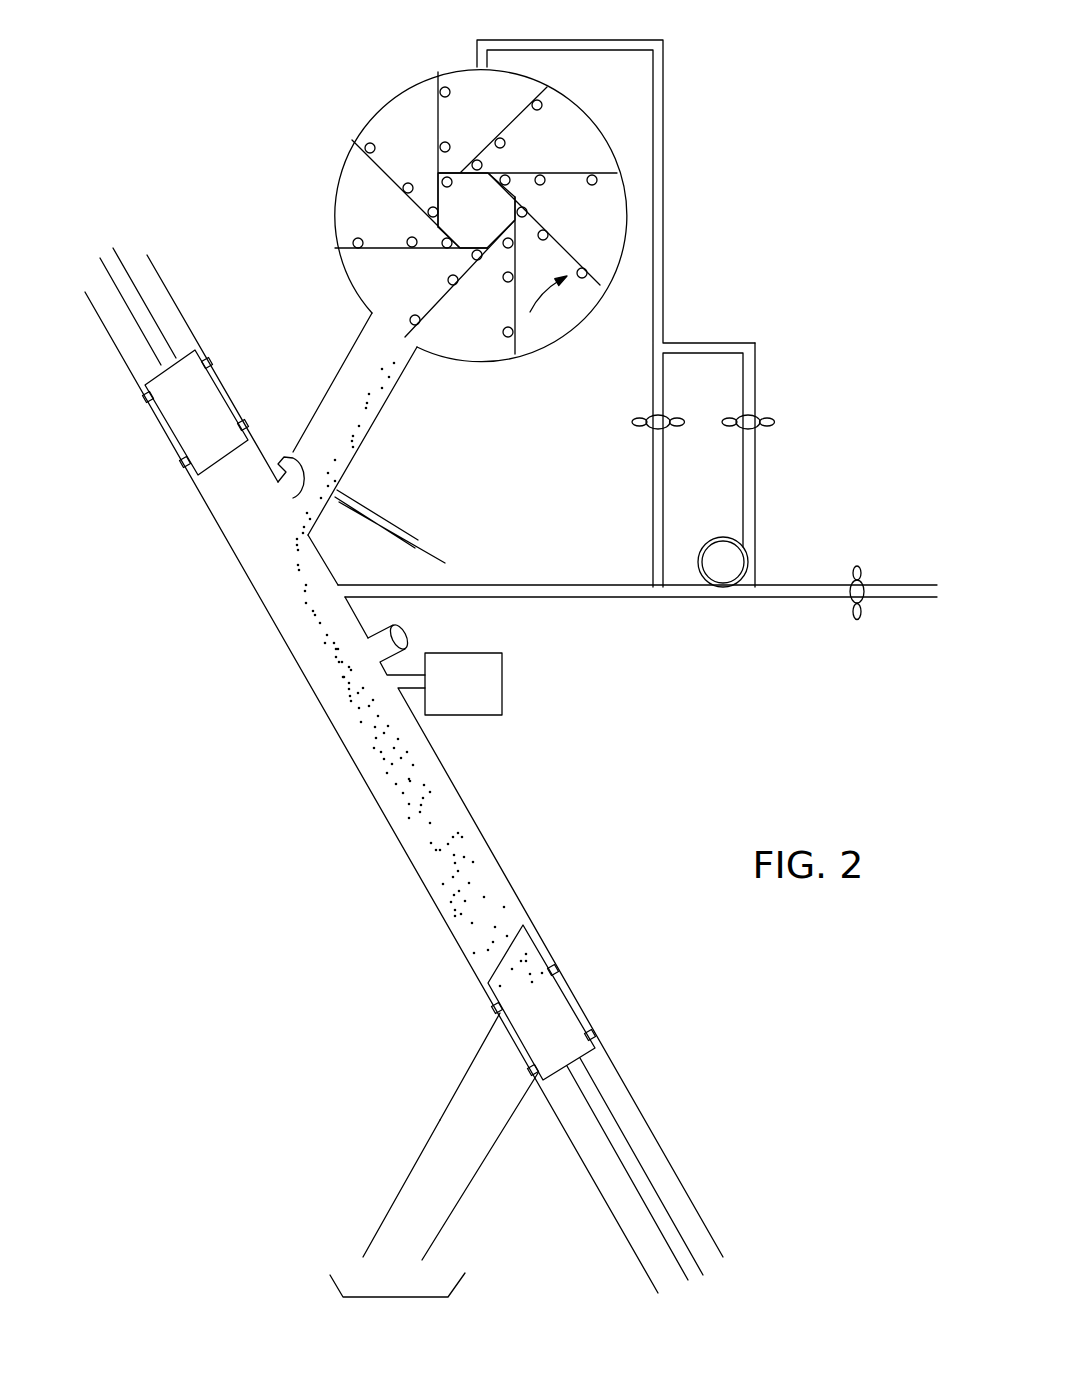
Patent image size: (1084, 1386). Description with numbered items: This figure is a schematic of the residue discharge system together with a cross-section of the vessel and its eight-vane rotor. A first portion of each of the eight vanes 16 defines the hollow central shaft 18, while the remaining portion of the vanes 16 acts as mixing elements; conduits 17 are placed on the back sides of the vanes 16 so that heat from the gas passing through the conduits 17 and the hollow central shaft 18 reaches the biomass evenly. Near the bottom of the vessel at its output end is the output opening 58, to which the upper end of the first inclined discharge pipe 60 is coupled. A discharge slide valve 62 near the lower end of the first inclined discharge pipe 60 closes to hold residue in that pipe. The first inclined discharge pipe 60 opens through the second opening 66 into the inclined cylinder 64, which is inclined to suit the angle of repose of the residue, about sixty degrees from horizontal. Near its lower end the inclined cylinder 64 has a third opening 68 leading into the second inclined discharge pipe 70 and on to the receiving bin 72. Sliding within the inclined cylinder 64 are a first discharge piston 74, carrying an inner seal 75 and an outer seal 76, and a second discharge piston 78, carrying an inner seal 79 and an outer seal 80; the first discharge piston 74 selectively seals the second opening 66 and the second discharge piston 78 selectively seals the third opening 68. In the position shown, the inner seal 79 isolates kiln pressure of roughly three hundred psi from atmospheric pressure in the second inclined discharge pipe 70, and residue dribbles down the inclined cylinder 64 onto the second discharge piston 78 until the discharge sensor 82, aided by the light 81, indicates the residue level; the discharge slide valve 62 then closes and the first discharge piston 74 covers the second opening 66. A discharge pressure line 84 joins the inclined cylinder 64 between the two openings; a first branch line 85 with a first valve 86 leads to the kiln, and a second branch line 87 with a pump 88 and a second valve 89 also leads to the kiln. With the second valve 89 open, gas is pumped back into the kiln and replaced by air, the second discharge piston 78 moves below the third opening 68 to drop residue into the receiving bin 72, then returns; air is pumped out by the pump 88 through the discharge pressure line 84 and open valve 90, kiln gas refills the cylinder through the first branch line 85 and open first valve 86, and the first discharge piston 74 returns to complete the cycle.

The vanes 16 is at (438, 99).
The conduits 17 is at (441, 78).
The hollow central shaft 18 is at (498, 227).
The output opening 58 is at (390, 330).
The first inclined discharge pipe 60 is at (390, 397).
The discharge slide valve 62 is at (378, 512).
The inclined cylinder 64 is at (295, 655).
The second opening 66 is at (291, 455).
The third opening 68 is at (513, 1043).
The second inclined discharge pipe 70 is at (432, 1128).
The receiving bin 72 is at (330, 1283).
The first discharge piston 74 is at (188, 423).
The inner seal 75 is at (184, 467).
The outer seal 76 is at (148, 400).
The second discharge piston 78 is at (555, 1015).
The inner seal 79 is at (558, 966).
The outer seal 80 is at (597, 1037).
The light 81 is at (408, 634).
The discharge sensor 82 is at (502, 677).
The discharge pressure line 84 is at (613, 600).
The first branch line 85 is at (665, 178).
The first valve 86 is at (645, 421).
The second branch line 87 is at (755, 489).
The pump 88 is at (735, 596).
The second valve 89 is at (772, 422).
The valve 90 is at (862, 619).